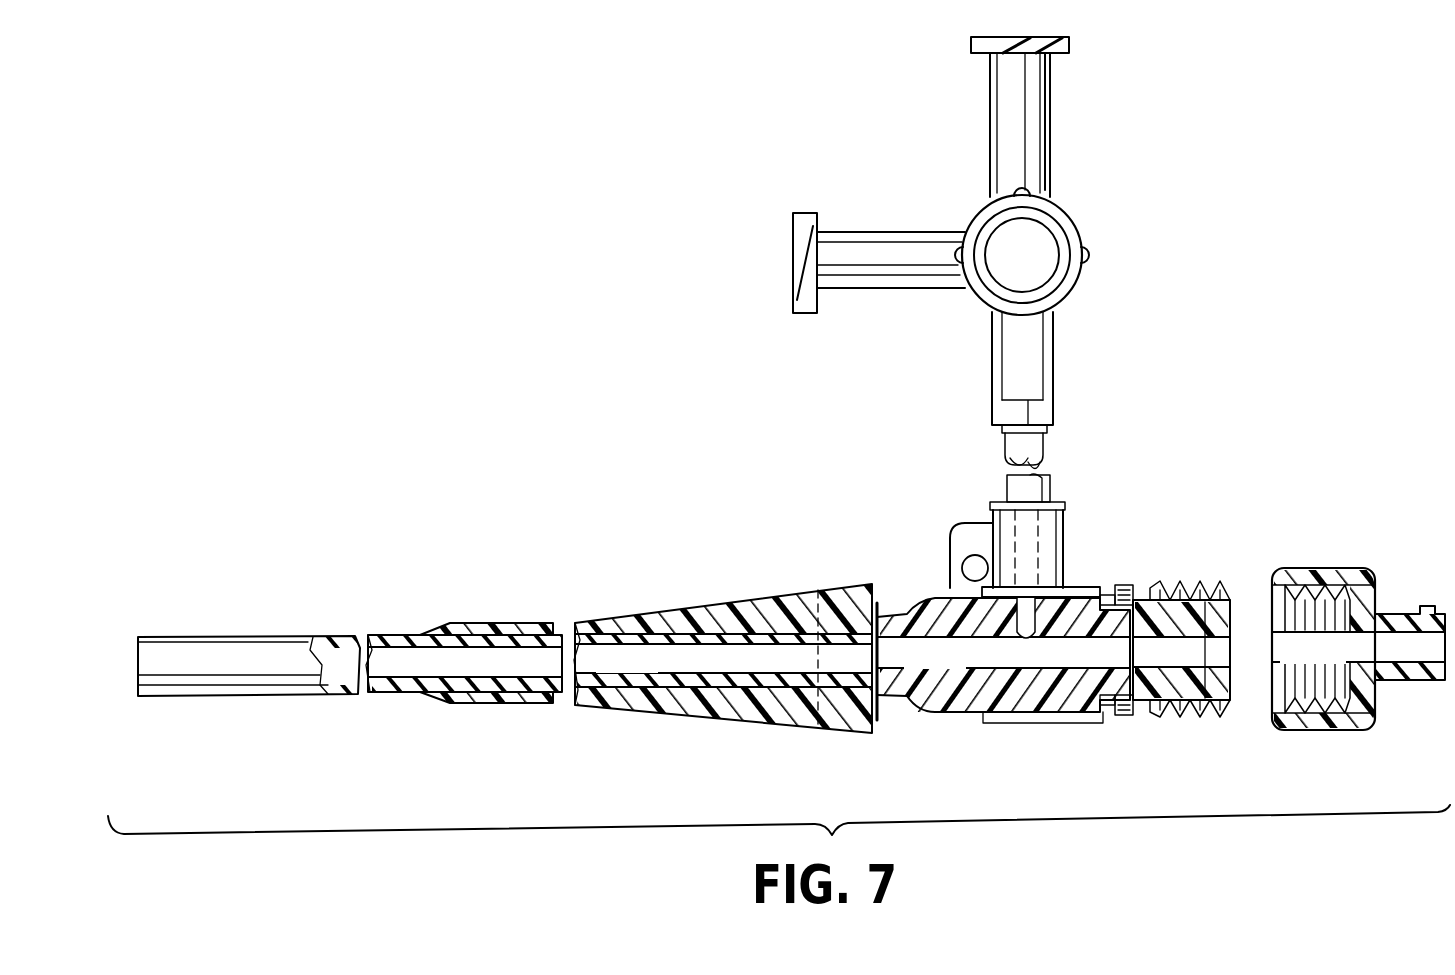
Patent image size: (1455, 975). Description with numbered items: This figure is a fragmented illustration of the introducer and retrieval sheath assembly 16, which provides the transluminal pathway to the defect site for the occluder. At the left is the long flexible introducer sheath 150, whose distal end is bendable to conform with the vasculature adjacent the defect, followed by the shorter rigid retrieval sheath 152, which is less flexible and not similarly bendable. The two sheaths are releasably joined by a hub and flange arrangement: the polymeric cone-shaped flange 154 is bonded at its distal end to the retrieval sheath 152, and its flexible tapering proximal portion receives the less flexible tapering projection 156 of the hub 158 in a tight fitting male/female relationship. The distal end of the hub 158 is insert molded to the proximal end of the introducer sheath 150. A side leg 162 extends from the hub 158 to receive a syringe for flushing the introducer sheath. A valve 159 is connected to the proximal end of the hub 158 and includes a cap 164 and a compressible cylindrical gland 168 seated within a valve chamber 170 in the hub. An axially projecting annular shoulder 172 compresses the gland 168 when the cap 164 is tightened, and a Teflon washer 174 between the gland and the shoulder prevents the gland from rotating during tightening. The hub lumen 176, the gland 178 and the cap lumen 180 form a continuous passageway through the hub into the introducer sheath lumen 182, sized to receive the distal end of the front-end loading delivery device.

The introducer and retrieval sheath assembly 16 is at (857, 258).
The introducer sheath 150 is at (240, 636).
The retrieval sheath 152 is at (487, 627).
The cone-shaped flange 154 is at (723, 641).
The tapering projection 156 is at (830, 612).
The hub 158 is at (925, 560).
The valve 159 is at (1210, 724).
The side leg 162 is at (990, 443).
The cap 164 is at (1343, 648).
The gland 168 is at (1172, 625).
The valve chamber 170 is at (1250, 620).
The annular shoulder 172 is at (1262, 612).
The Teflon washer 174 is at (1243, 680).
The hub lumen 176 is at (964, 670).
The gland 178 is at (1196, 669).
The cap lumen 180 is at (1346, 667).
The hub bore 182 is at (656, 671).